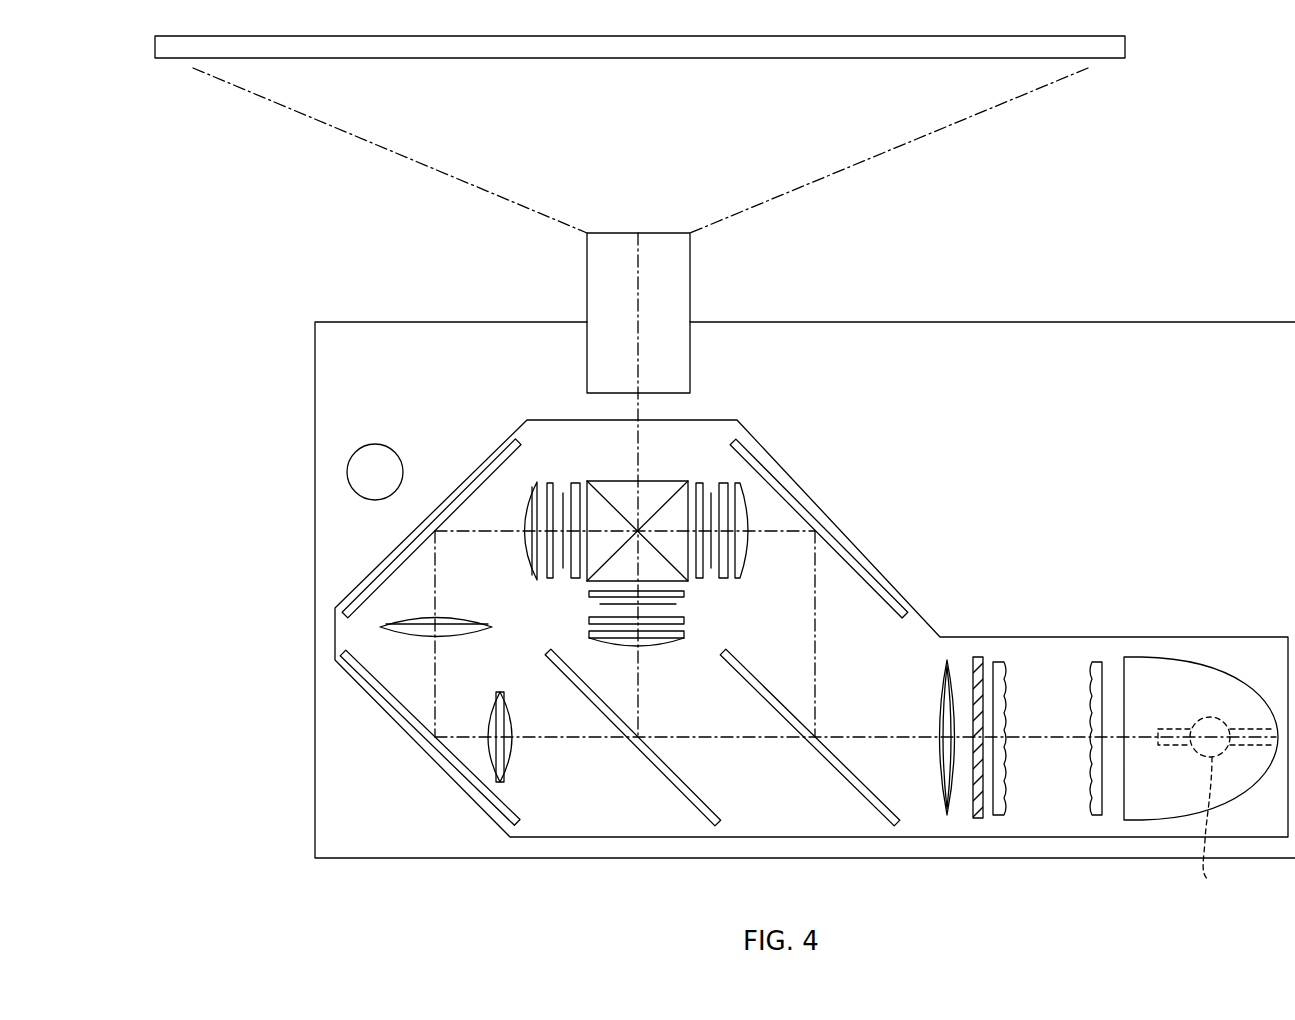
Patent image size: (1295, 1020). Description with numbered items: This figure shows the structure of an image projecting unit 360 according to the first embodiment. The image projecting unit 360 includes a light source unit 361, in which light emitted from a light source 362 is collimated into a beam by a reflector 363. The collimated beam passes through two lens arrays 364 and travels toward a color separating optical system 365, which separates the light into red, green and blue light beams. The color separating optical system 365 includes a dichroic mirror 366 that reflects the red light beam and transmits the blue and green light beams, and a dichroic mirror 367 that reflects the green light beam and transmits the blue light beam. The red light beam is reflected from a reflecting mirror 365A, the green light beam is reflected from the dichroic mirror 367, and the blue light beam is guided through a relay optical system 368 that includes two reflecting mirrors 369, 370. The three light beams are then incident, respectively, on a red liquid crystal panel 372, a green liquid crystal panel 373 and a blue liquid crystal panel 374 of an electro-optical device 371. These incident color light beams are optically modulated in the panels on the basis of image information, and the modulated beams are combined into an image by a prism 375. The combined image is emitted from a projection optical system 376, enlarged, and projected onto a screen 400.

The screen 400 is at (1127, 46).
The image projecting unit 360 is at (1188, 290).
The projection optical system 376 is at (691, 276).
The prism 375 is at (607, 480).
The electro-optical device 371 is at (660, 452).
The red liquid crystal panel 372 is at (714, 468).
The green liquid crystal panel 373 is at (722, 617).
The blue liquid crystal panel 374 is at (553, 590).
The reflecting mirror 370 is at (480, 468).
The reflecting mirror 369 is at (505, 803).
The relay optical system 368 is at (407, 790).
The dichroic mirror 367 is at (690, 792).
The dichroic mirror 366 is at (768, 690).
The color separating optical system 365 is at (818, 822).
The reflecting mirror 365A is at (793, 490).
The lens arrays 364 is at (1097, 662).
The reflector 363 is at (1210, 672).
The light source 362 is at (1220, 831).
The light source unit 361 is at (1155, 665).